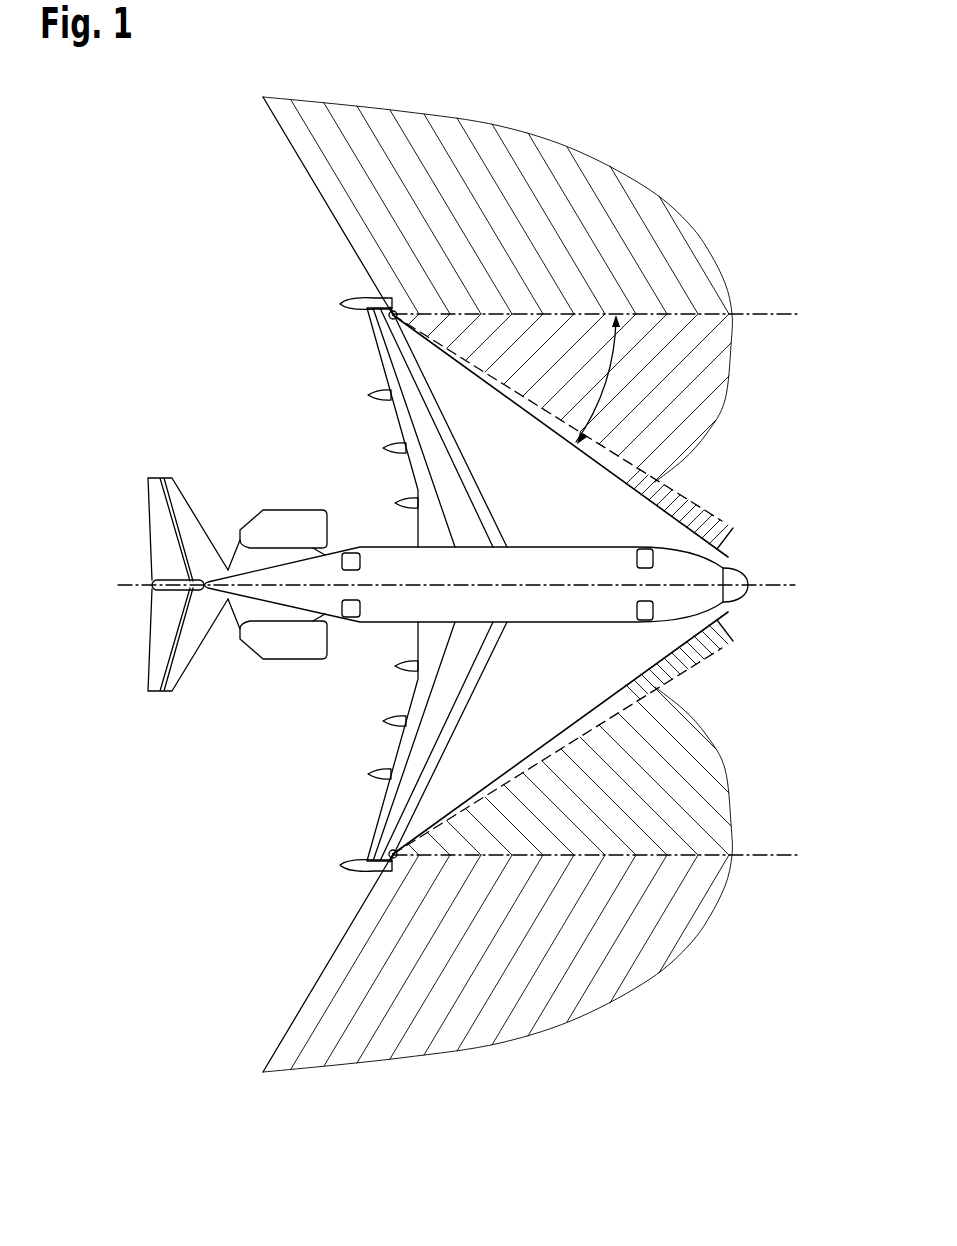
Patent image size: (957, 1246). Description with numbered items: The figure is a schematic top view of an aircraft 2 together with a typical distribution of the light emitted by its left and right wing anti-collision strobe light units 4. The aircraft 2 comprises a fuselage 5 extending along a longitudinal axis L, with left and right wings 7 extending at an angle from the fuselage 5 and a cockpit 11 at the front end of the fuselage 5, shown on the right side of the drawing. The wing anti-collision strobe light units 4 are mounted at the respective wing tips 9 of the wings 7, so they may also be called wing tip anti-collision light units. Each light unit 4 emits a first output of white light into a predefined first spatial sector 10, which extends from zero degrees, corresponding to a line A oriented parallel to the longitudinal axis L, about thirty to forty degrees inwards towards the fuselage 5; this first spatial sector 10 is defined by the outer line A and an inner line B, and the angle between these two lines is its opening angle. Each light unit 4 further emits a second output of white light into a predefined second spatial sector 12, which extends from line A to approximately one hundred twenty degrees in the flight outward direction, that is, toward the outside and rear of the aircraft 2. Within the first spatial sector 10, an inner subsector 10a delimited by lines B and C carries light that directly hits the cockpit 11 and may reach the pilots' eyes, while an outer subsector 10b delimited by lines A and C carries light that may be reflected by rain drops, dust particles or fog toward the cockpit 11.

The aircraft 2 is at (215, 418).
The wing anti-collision strobe light unit 4 is at (389, 317).
The fuselage 5 is at (547, 556).
The wing 7 is at (438, 456).
The wing tip 9 is at (335, 290).
The first spatial sector 10 is at (832, 480).
The inner subsector 10a is at (712, 492).
The outer subsector 10b is at (760, 412).
The cockpit 11 is at (762, 568).
The second spatial sector 12 is at (590, 145).
The line A is at (795, 320).
The line B is at (722, 555).
The line C is at (720, 515).
The longitudinal axis L is at (800, 585).